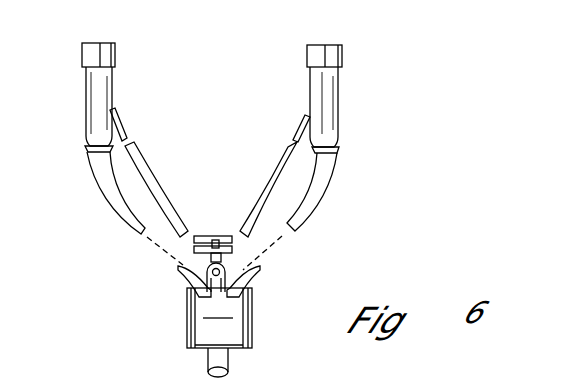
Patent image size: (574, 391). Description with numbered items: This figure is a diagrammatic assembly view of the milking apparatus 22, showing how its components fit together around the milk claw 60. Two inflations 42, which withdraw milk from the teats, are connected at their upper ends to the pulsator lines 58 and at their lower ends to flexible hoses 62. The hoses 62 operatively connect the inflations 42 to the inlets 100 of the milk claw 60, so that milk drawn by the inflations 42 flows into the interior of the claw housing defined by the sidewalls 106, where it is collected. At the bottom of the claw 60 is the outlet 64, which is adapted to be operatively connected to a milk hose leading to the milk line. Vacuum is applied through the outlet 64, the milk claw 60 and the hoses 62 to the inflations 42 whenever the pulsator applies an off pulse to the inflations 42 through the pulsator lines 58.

The milking apparatus 22 is at (340, 183).
The inflations 42 is at (340, 118).
The pulsator lines 58 is at (208, 236).
The milk claw 60 is at (257, 282).
The flexible hoses 62 is at (118, 212).
The outlet 64 is at (228, 372).
The inlets 100 is at (176, 272).
The sidewalls 106 is at (235, 308).